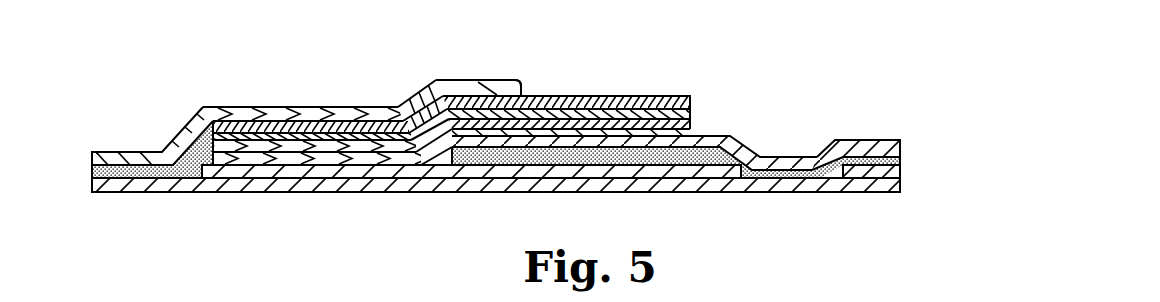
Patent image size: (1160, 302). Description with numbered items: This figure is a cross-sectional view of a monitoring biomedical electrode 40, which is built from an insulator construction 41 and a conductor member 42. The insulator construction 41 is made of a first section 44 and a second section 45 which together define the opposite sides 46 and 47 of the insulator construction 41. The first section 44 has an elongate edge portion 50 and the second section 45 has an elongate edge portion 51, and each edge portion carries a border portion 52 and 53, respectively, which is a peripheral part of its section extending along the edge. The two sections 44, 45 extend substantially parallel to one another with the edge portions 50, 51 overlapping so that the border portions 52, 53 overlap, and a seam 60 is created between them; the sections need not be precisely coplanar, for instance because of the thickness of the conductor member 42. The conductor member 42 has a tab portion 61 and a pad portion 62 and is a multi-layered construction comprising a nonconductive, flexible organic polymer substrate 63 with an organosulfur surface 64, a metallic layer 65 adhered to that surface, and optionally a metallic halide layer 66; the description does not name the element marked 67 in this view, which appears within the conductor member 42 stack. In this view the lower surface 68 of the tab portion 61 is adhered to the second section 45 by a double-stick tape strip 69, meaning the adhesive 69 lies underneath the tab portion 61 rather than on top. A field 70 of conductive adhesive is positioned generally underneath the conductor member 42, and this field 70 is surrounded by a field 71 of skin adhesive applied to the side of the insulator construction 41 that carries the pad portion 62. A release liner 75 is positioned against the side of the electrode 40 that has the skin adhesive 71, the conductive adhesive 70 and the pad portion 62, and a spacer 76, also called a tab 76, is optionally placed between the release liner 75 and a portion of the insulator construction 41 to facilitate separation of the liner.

The electrode 40 is at (735, 58).
The insulator construction 41 is at (172, 116).
The conductor member 42 is at (713, 103).
The first section 44 is at (404, 106).
The second section 45 is at (718, 137).
The first side 46 is at (338, 110).
The second side 47 is at (376, 118).
The edge portion 50 is at (522, 93).
The edge portion 51 is at (455, 137).
The border portion 52 is at (507, 95).
The border portion 53 is at (552, 128).
The seam 60 is at (483, 80).
The tab portion 61 is at (616, 88).
The pad portion 62 is at (226, 102).
The flexible organic polymer substrate 63 is at (260, 130).
The organosulfur surface 64 is at (301, 137).
The metallic layer 65 is at (251, 144).
The metallic halide layer 66 is at (323, 158).
The middle conductive layer 67 is at (643, 97).
The lower surface 68 is at (683, 120).
The double-stick tape strip 69 is at (480, 160).
The field of conductive adhesive 70 is at (403, 172).
The field of skin adhesive 71 is at (188, 168).
The release liner 75 is at (846, 190).
The spacer 76 is at (893, 175).